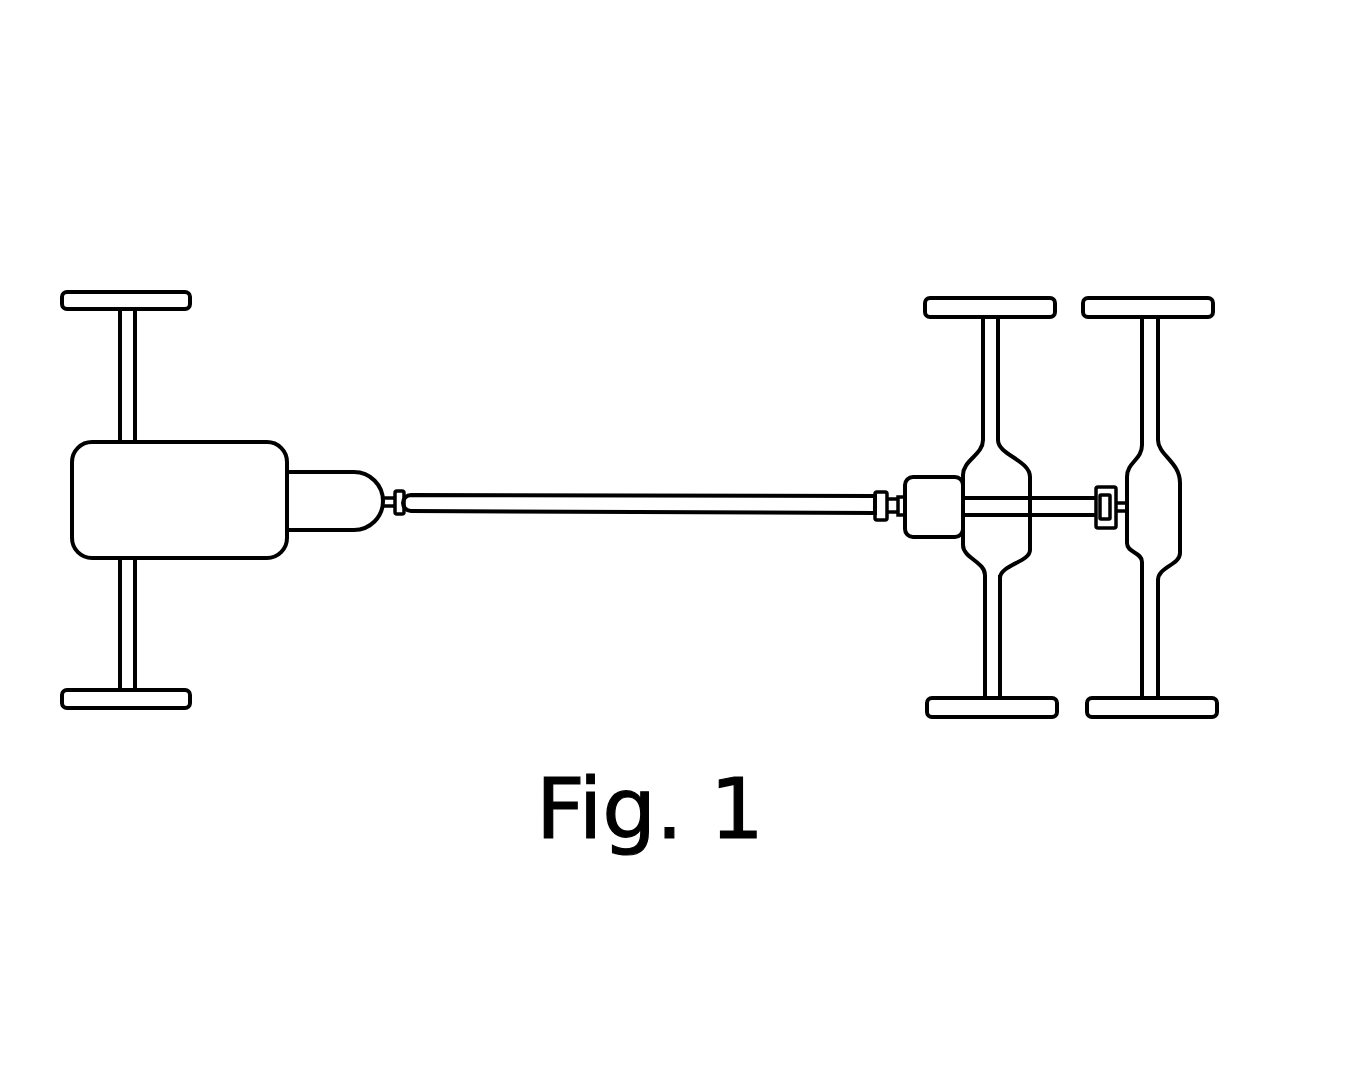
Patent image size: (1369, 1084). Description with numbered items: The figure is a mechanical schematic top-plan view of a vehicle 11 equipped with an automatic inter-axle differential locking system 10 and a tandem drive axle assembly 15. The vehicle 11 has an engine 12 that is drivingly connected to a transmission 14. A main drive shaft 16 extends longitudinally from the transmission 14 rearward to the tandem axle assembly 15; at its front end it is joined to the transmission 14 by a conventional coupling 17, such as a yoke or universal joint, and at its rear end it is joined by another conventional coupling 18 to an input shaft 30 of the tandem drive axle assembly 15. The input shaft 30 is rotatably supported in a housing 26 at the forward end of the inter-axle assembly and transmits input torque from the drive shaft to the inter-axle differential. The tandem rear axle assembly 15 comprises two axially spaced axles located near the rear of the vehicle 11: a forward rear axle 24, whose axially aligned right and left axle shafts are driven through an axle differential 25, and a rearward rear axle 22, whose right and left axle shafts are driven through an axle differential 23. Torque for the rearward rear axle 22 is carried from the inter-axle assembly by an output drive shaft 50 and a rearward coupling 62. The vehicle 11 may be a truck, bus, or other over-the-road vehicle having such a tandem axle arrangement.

The automatic inter-axle differential locking system 10 is at (1160, 225).
The vehicle 11 is at (625, 305).
The engine 12 is at (198, 458).
The transmission 14 is at (328, 480).
The tandem drive axle assembly 15 is at (1195, 425).
The main drive shaft 16 is at (632, 495).
The coupling 17 is at (408, 490).
The coupling 18 is at (874, 492).
The rearward rear axle 22 is at (1158, 620).
The axle differential 23 is at (1160, 527).
The forward rear axle 24 is at (987, 652).
The axle differential 25 is at (987, 548).
The housing 26 is at (928, 538).
The input shaft 30 is at (899, 495).
The output drive shaft 50 is at (1060, 497).
The rearward coupling 62 is at (1105, 528).